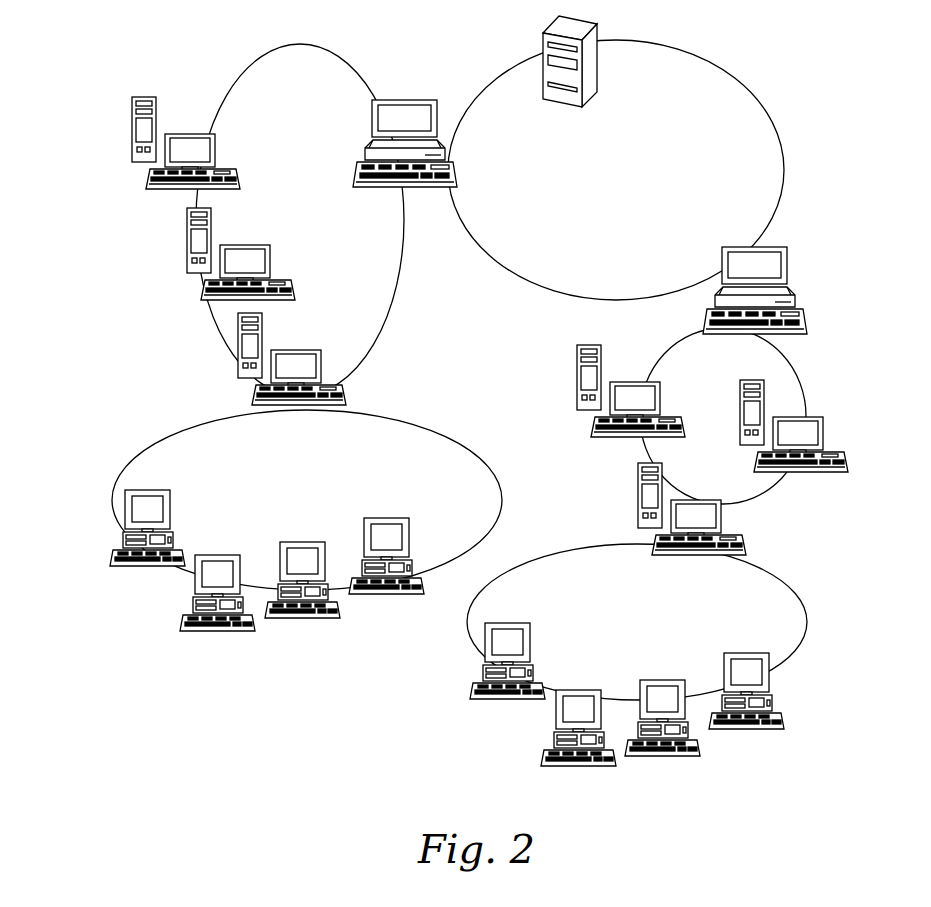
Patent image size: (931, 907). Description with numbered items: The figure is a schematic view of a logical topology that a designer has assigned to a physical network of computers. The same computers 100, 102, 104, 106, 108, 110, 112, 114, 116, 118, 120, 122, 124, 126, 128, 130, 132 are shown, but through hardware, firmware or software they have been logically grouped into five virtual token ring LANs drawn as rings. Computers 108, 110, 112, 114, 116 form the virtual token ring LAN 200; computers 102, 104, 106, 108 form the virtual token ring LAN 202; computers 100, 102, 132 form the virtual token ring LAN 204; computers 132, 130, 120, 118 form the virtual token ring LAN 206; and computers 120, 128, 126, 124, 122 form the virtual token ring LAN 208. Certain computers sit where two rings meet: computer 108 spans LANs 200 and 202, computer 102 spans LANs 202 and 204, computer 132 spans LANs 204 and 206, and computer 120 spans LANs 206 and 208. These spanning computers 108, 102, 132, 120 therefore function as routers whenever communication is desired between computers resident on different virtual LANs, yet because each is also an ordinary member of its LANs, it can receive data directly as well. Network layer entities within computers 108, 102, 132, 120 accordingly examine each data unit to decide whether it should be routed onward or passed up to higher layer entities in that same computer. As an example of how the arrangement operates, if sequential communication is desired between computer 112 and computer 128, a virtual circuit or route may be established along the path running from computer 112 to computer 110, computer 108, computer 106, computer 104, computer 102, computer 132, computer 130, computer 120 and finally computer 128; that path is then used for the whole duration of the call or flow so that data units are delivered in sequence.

The computer 100 is at (543, 42).
The computer 102 is at (372, 118).
The computer 104 is at (132, 115).
The computer 106 is at (187, 223).
The computer 108 is at (238, 341).
The computer 110 is at (133, 566).
The computer 112 is at (240, 631).
The computer 114 is at (322, 620).
The computer 116 is at (405, 593).
The computer 118 is at (577, 363).
The computer 120 is at (675, 554).
The computer 122 is at (490, 700).
The computer 124 is at (598, 766).
The computer 126 is at (682, 755).
The computer 128 is at (764, 730).
The computer 130 is at (822, 436).
The computer 132 is at (788, 269).
The virtual token ring LAN 200 is at (112, 500).
The virtual token ring LAN 202 is at (346, 49).
The virtual token ring LAN 204 is at (785, 176).
The virtual token ring LAN 206 is at (805, 376).
The virtual token ring LAN 208 is at (808, 620).